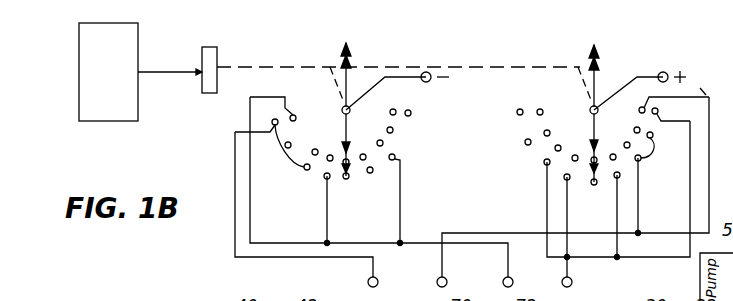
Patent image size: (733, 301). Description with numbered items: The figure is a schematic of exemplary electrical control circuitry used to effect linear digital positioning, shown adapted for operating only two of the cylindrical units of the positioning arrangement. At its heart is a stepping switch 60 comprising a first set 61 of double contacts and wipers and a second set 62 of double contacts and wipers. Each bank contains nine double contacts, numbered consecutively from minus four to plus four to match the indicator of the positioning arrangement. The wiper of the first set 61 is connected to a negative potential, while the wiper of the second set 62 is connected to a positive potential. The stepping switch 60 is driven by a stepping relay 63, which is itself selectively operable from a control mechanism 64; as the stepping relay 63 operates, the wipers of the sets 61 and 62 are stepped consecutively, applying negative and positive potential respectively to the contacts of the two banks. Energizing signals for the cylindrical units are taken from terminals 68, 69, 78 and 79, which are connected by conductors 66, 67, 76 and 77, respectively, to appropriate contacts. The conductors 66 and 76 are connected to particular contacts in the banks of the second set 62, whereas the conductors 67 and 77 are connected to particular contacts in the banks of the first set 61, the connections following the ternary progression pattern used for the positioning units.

The stepping switch 60 is at (483, 60).
The first set of double contacts and wipers 61 is at (343, 110).
The second set of double contacts and wipers 62 is at (591, 110).
The stepping relay 63 is at (202, 61).
The control mechanism 64 is at (108, 60).
The conductor 66 is at (640, 262).
The conductor 67 is at (474, 247).
The terminal 68 is at (571, 280).
The terminal 69 is at (520, 278).
The conductor 76 is at (478, 232).
The conductor 77 is at (338, 258).
The terminal 78 is at (458, 272).
The terminal 79 is at (390, 287).